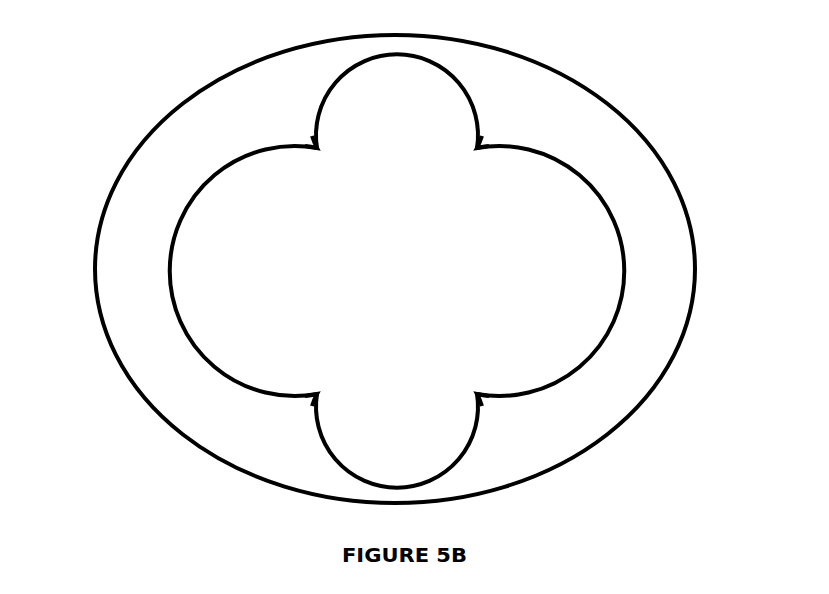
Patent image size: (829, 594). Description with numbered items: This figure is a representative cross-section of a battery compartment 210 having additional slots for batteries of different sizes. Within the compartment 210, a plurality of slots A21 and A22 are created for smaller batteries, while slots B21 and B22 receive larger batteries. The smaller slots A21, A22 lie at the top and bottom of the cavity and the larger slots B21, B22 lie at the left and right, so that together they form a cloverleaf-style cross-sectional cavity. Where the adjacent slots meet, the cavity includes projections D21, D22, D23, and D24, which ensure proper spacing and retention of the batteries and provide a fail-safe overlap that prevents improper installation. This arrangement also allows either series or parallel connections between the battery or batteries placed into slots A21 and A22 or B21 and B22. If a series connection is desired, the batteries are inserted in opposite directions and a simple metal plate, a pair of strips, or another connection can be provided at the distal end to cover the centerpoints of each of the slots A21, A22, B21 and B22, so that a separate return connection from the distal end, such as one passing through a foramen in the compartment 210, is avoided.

The compartment 210 is at (529, 438).
The slot A21 is at (422, 122).
The slot A22 is at (422, 434).
The slot B21 is at (282, 258).
The slot B22 is at (562, 258).
The projection D21 is at (302, 133).
The projection D22 is at (302, 405).
The projection D23 is at (490, 137).
The projection D24 is at (490, 405).